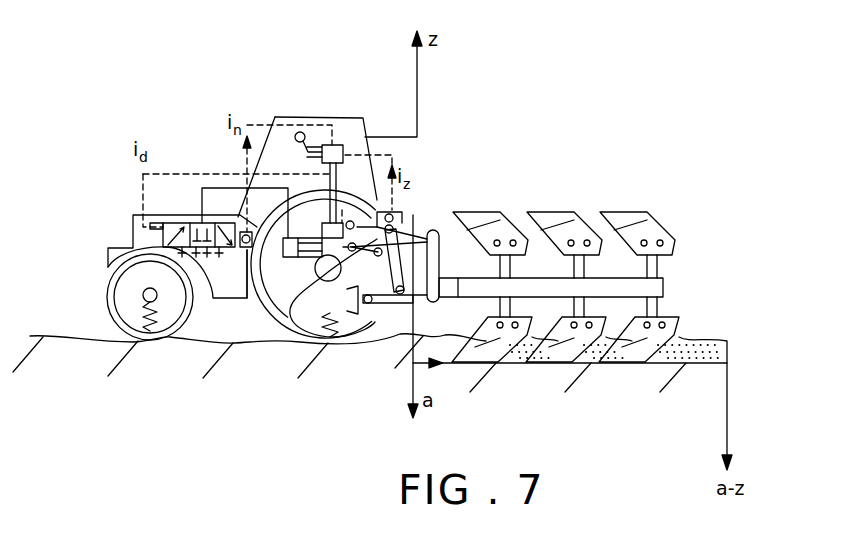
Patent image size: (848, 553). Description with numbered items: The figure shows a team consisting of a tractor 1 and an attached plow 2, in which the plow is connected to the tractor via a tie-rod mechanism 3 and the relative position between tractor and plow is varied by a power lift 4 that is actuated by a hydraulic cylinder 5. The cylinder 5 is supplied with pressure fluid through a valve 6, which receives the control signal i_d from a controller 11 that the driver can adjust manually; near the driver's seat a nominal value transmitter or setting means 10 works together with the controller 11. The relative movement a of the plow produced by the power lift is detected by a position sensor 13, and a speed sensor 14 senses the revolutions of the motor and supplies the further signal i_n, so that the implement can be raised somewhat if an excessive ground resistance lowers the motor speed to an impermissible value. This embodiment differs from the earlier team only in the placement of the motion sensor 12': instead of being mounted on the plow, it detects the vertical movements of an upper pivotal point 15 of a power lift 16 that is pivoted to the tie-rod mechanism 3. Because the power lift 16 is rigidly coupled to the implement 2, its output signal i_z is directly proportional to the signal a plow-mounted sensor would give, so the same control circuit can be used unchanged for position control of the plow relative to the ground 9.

The tractor 1 is at (212, 292).
The plow 2 is at (645, 232).
The tie-rod mechanism 3 is at (425, 232).
The power lift 4 is at (420, 209).
The hydraulic cylinder 5 is at (300, 257).
The valve 6 is at (175, 227).
The ground 9 is at (578, 409).
The nominal value transmitter 10 is at (313, 143).
The controller 11 is at (338, 152).
The motion sensor 12' is at (406, 187).
The position sensor 13 is at (320, 228).
The speed sensor 14 is at (243, 250).
The upper pivotal point 15 is at (245, 234).
The power lift 16 is at (362, 300).